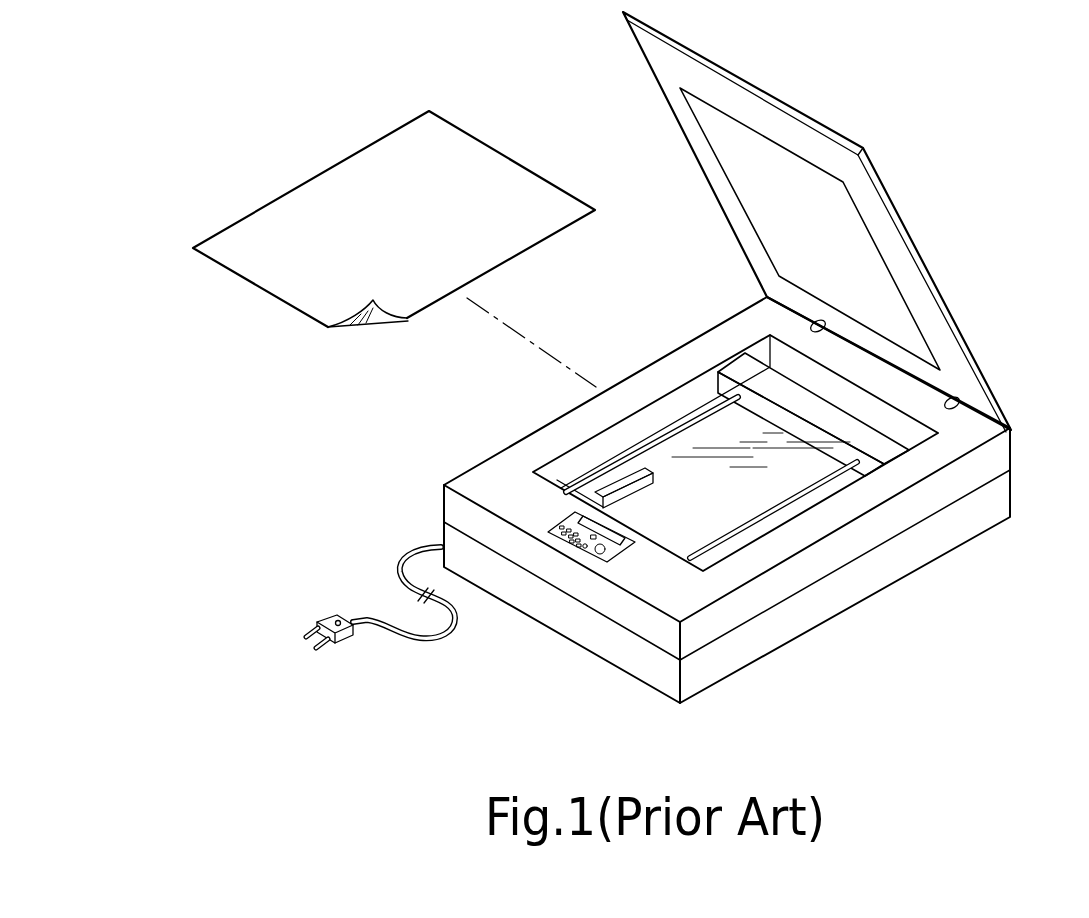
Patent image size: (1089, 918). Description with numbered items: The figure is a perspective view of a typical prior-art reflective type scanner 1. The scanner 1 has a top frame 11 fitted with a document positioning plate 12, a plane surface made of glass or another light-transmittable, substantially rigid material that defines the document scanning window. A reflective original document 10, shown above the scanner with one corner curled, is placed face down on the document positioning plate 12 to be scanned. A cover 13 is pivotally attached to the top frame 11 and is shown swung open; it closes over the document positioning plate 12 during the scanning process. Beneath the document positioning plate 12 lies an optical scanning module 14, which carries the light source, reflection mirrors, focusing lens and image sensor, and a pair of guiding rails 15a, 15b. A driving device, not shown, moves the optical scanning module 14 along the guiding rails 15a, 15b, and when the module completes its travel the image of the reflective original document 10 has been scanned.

The scanner 1 is at (672, 369).
The reflective original document 10 is at (367, 175).
The top frame 11 is at (948, 452).
The document positioning plate 12 is at (703, 513).
The cover 13 is at (925, 258).
The optical scanning module 14 is at (890, 452).
The guiding rail 15a is at (706, 418).
The guiding rail 15b is at (813, 490).